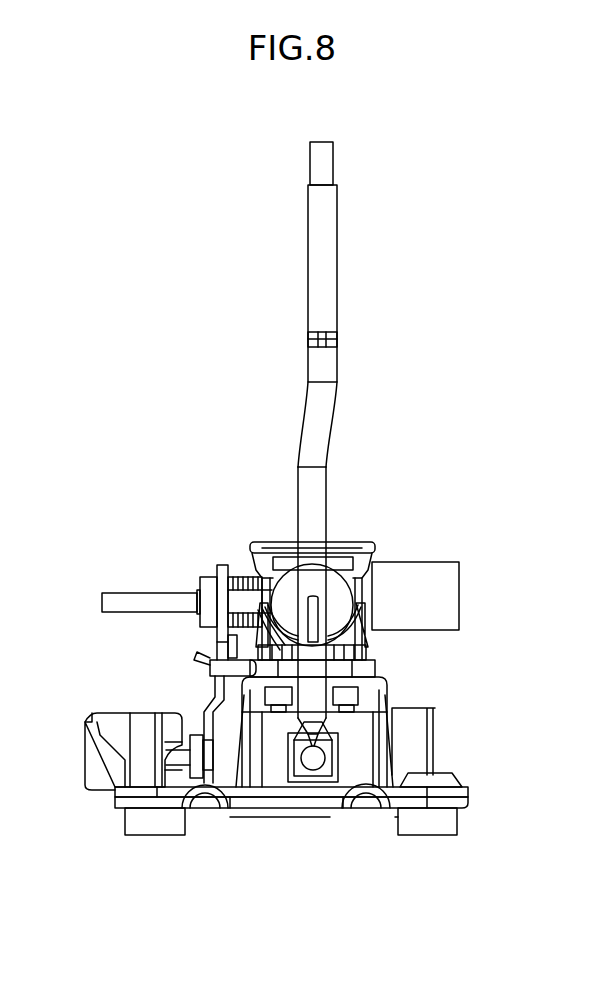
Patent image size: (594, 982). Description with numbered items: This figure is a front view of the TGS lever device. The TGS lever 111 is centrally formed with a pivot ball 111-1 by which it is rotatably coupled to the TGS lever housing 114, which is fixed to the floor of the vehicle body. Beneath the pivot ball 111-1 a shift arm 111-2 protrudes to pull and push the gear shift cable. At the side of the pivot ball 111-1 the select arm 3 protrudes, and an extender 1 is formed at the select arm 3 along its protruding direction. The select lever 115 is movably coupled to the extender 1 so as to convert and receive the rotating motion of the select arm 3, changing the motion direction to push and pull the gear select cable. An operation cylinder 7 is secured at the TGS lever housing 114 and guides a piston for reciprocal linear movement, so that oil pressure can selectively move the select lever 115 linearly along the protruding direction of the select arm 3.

The extender 1 is at (188, 583).
The select arm 3 is at (118, 604).
The operation cylinder 7 is at (418, 569).
The TGS lever 111 is at (325, 252).
The pivot ball 111-1 is at (338, 608).
The shift arm 111-2 is at (318, 757).
The TGS lever housing 114 is at (385, 688).
The select lever 115 is at (213, 697).